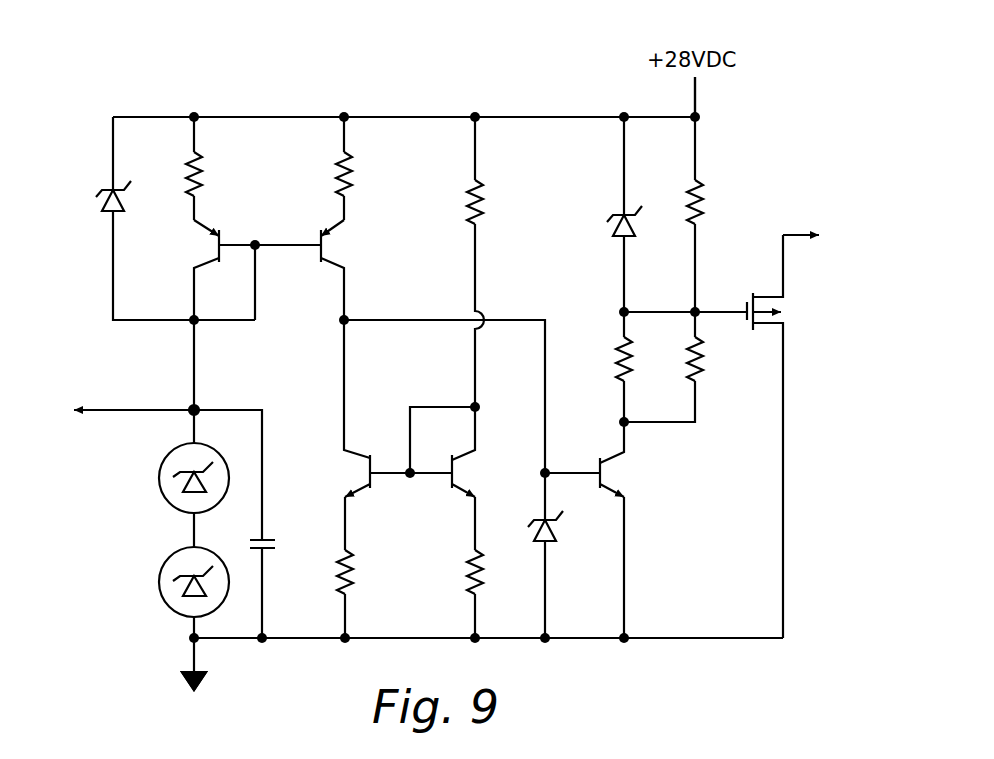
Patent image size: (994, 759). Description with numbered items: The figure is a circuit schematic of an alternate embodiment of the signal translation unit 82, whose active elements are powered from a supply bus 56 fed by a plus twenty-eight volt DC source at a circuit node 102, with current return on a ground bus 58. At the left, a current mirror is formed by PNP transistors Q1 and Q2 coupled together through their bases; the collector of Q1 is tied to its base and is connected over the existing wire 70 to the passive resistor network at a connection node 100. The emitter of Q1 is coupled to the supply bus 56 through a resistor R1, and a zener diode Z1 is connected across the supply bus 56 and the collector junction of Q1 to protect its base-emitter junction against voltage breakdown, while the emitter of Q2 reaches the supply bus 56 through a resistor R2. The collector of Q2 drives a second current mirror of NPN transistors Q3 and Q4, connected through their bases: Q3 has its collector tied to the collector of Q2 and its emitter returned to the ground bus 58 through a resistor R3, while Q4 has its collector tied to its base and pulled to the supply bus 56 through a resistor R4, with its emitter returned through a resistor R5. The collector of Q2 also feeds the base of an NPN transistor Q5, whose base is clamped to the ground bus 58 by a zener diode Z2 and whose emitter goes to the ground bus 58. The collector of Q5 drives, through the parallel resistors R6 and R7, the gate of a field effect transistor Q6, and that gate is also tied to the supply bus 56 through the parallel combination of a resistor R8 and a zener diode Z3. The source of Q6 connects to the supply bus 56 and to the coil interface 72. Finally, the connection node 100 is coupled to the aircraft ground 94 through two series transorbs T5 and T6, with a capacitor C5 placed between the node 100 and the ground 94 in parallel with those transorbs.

The resistor R1 is at (204, 173).
The resistor R2 is at (352, 178).
The resistor R3 is at (354, 572).
The resistor R4 is at (482, 203).
The resistor R5 is at (469, 560).
The resistor R6 is at (617, 350).
The resistor R7 is at (704, 357).
The resistor R8 is at (706, 203).
The zener diode Z1 is at (98, 193).
The zener diode Z2 is at (548, 541).
The zener diode Z3 is at (612, 216).
The PNP transistor Q1 is at (214, 250).
The PNP transistor Q2 is at (324, 250).
The NPN transistor Q3 is at (359, 458).
The NPN transistor Q4 is at (456, 475).
The NPN transistor Q5 is at (612, 472).
The field effect transistor Q6 is at (752, 300).
The capacitor C5 is at (268, 542).
The transorb T5 is at (163, 500).
The transorb T6 is at (163, 578).
The supply bus 56 is at (500, 115).
The ground bus 58 is at (717, 640).
The wire 70 is at (130, 412).
The coil interface 72 is at (838, 226).
The signal translation unit 82 is at (76, 345).
The aircraft ground 94 is at (185, 685).
The connection node 100 is at (197, 408).
The circuit node 102 is at (702, 116).